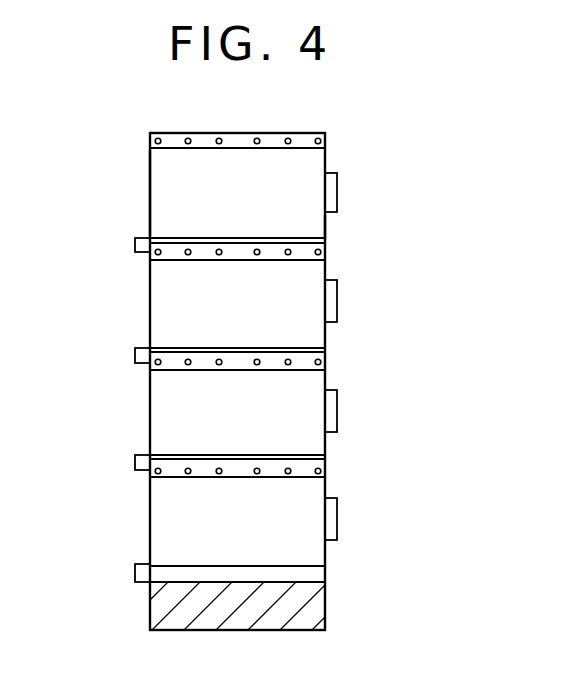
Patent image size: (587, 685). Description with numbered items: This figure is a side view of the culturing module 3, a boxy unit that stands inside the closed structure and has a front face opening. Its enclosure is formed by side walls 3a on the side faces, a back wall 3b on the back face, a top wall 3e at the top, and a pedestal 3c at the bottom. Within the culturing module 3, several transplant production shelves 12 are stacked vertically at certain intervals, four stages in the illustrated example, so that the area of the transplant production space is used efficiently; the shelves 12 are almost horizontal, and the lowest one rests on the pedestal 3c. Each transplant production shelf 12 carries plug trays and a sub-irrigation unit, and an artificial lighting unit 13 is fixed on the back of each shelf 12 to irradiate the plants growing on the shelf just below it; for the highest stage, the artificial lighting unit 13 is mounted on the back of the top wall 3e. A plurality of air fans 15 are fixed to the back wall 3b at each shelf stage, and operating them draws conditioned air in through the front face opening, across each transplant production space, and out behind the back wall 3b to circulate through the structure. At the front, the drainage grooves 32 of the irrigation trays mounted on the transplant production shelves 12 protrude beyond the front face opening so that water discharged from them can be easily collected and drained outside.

The culturing module 3 is at (227, 129).
The side wall 3a is at (165, 178).
The back wall 3b is at (325, 228).
The pedestal 3c is at (325, 607).
The top wall 3e is at (285, 132).
The transplant production shelf 12 is at (182, 232).
The artificial lighting unit 13 is at (303, 147).
The air fan 15 is at (337, 192).
The drainage groove 32 is at (135, 243).